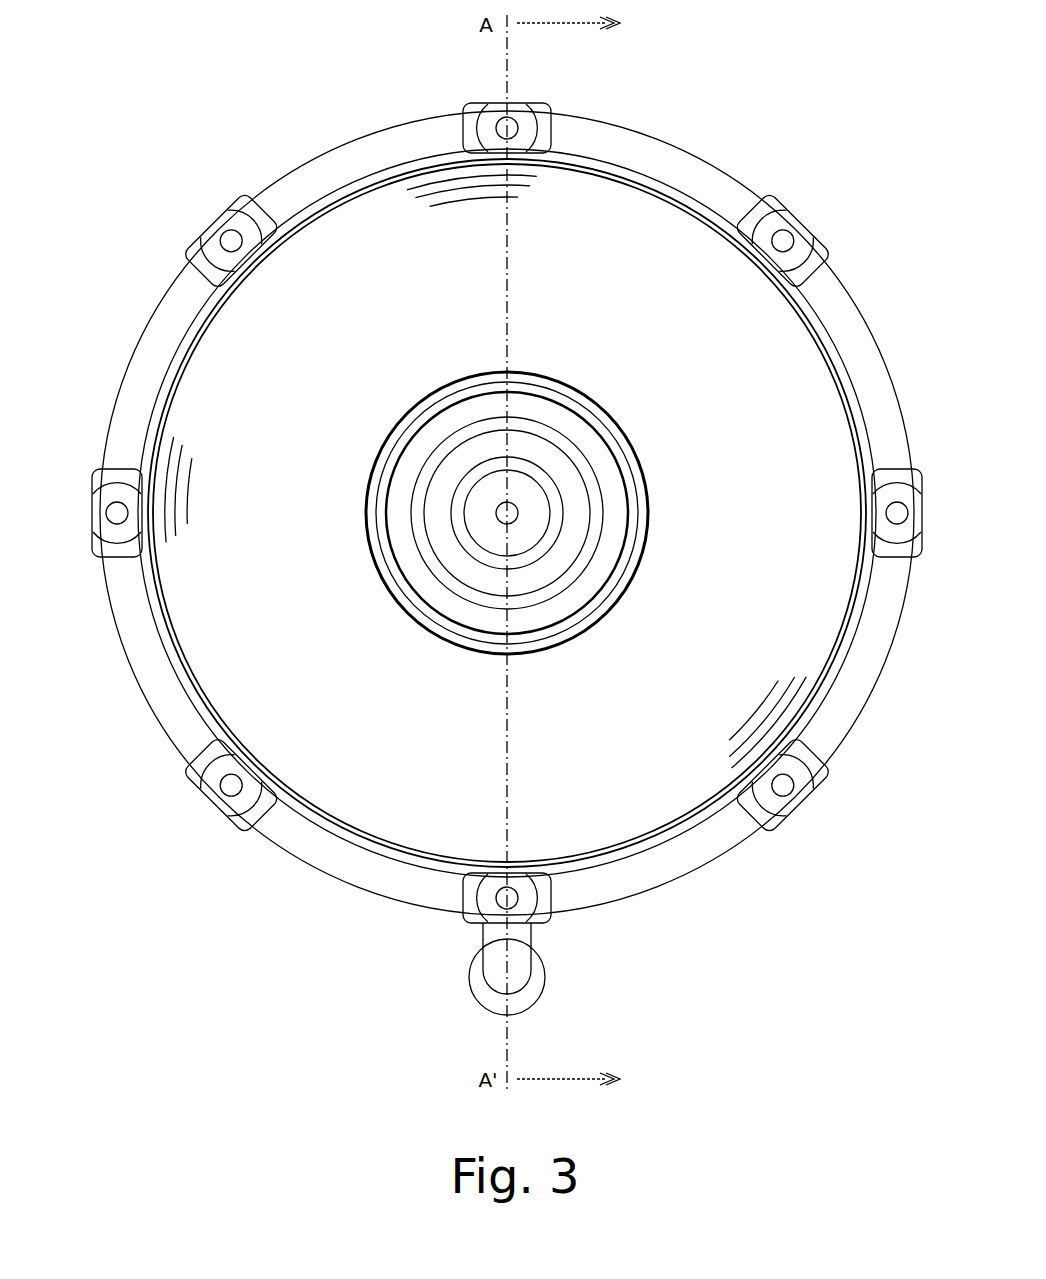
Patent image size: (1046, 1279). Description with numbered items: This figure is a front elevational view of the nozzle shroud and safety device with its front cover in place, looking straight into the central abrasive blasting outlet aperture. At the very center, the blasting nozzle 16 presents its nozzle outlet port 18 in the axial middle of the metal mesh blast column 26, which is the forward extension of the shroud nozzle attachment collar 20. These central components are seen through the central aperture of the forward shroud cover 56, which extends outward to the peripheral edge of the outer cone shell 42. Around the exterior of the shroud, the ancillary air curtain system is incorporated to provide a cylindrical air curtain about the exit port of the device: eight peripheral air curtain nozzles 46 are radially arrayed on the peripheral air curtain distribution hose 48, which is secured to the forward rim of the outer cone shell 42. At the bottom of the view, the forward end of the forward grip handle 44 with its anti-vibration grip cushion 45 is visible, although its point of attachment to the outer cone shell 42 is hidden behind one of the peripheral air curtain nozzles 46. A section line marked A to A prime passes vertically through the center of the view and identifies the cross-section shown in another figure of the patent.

The blasting nozzle 16 is at (538, 496).
The nozzle outlet port 18 is at (518, 518).
The shroud nozzle attachment collar 20 is at (545, 420).
The metal mesh blast column 26 is at (372, 512).
The outer cone shell 42 is at (375, 175).
The forward grip handle 44 is at (483, 938).
The anti-vibration grip cushion 45 is at (548, 975).
The peripheral air curtain nozzles 46 is at (778, 200).
The peripheral air curtain distribution hose 48 is at (440, 115).
The forward shroud cover 56 is at (265, 350).